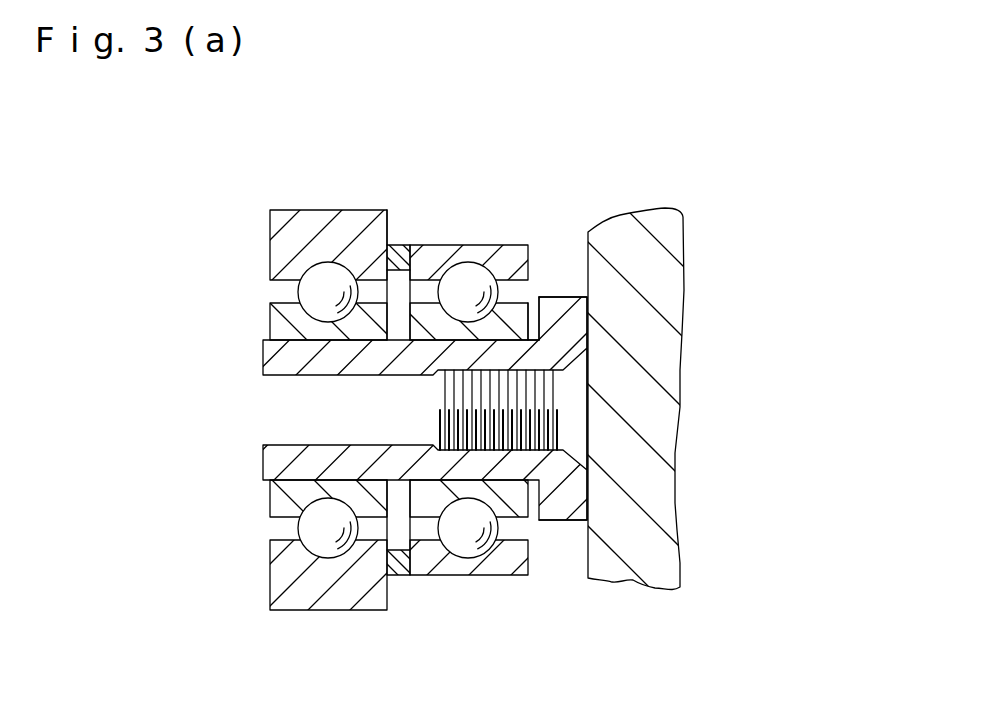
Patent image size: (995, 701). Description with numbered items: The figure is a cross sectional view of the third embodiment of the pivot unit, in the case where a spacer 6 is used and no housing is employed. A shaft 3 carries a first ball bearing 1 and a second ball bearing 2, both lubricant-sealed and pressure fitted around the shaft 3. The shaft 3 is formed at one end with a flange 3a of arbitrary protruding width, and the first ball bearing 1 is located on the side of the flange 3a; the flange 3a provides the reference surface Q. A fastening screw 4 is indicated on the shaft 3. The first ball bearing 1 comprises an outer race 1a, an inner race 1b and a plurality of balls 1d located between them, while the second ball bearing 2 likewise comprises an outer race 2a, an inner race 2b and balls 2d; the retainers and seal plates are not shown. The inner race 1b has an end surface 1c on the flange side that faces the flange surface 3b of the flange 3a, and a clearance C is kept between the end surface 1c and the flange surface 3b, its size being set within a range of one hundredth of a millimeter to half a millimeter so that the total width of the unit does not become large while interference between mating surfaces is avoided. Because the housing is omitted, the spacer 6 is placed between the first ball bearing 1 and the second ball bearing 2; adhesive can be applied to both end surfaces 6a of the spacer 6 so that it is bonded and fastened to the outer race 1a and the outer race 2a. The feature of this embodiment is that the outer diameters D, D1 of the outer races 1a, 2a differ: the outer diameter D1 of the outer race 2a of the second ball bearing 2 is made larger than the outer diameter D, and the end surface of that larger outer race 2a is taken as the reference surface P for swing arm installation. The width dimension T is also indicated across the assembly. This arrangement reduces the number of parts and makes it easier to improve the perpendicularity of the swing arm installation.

The first ball bearing 1 is at (477, 350).
The outer race 1a is at (517, 557).
The inner race 1b is at (517, 495).
The end surface 1c is at (553, 326).
The balls 1d is at (490, 525).
The second ball bearing 2 is at (410, 394).
The outer race 2a is at (299, 607).
The inner race 2b is at (277, 492).
The balls 2d is at (278, 527).
The shaft 3 is at (283, 358).
The flange 3a is at (518, 332).
The flange surface 3b is at (540, 299).
The fastening screw 4 is at (535, 372).
The spacer 6 is at (397, 573).
The end surfaces 6a is at (385, 574).
The reference surface P is at (388, 228).
The reference surface Q is at (588, 340).
The width T is at (587, 232).
The clearance C is at (539, 297).
The outer diameter D is at (237, 245).
The outer diameter D1 is at (199, 210).